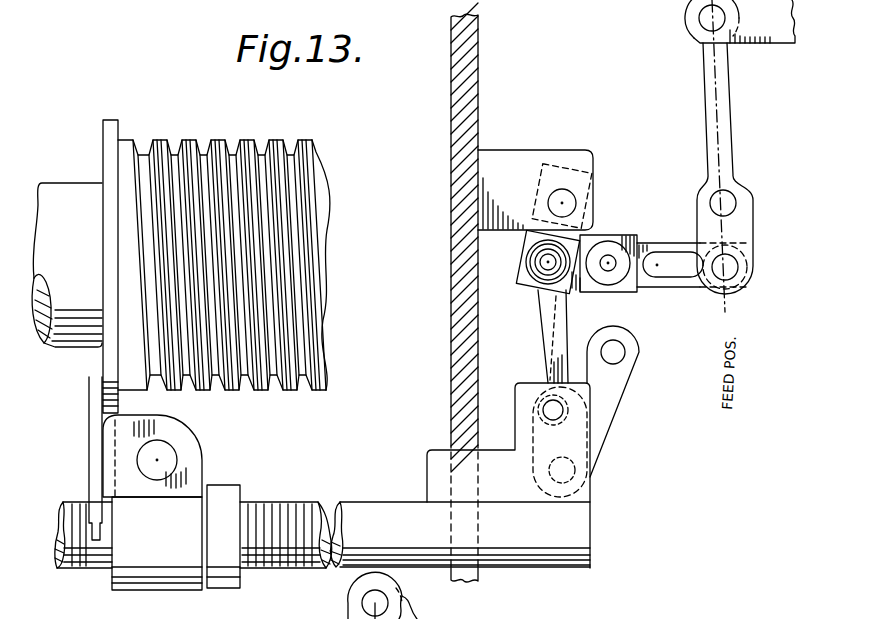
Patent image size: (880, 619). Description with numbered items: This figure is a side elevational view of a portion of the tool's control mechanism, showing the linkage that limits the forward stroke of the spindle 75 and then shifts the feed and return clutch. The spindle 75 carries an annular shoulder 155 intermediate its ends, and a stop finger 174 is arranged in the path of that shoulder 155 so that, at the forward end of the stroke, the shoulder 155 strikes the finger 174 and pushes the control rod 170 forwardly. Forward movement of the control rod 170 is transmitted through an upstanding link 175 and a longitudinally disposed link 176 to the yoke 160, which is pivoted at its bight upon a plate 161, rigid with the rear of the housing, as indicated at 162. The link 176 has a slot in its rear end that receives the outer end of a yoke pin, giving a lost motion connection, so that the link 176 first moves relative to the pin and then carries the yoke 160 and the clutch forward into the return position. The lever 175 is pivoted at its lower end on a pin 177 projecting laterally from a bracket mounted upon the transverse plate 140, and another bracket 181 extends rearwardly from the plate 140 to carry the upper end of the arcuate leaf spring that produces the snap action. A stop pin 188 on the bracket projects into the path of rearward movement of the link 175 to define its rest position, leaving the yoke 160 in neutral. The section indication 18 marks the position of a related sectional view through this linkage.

The spindle 75 is at (60, 206).
The annular shoulder 155 is at (103, 358).
The stop finger 174 is at (91, 480).
The upstanding link 175 is at (175, 555).
The transverse plate 140 is at (452, 383).
The control rod 170 is at (557, 541).
The pin 177 is at (572, 481).
The stop pin 188 is at (624, 358).
The bracket 181 is at (494, 168).
The longitudinally disposed link 176 is at (659, 243).
The yoke 160 is at (711, 108).
The pivot 162 is at (699, 18).
The plate 161 is at (776, 33).
The section line 18 is at (607, 113).